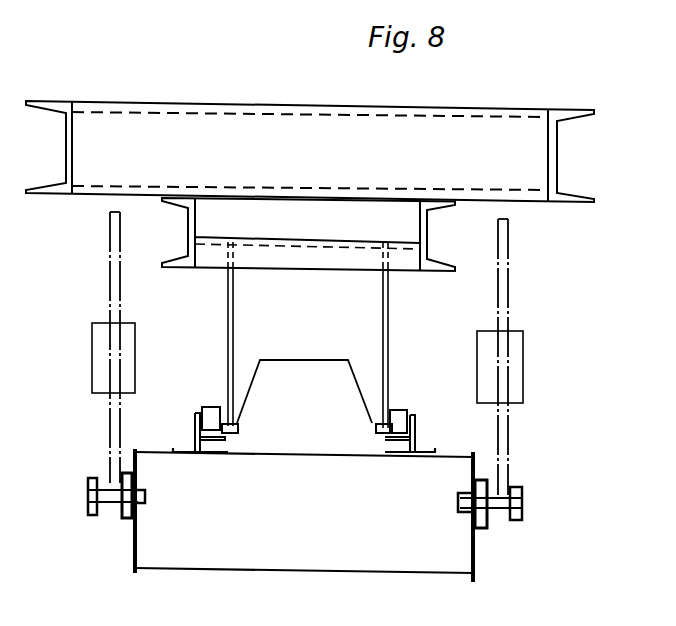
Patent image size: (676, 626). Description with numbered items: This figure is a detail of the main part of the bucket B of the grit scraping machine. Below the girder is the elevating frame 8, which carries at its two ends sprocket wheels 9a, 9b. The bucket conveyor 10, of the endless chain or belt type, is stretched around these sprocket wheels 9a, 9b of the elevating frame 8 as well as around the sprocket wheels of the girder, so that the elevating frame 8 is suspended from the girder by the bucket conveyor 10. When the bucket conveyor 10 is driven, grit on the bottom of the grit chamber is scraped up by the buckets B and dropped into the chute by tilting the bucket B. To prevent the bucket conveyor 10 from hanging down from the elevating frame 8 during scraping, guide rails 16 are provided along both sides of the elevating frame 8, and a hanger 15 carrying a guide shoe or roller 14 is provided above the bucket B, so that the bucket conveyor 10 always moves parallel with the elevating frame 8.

The elevating frame 8 is at (164, 123).
The sprocket wheel 9a is at (95, 365).
The sprocket wheel 9b is at (312, 369).
The bucket conveyor 10 is at (113, 505).
The guide shoe 14 is at (212, 407).
The hanger 15 is at (193, 428).
The guide rails 16 is at (220, 453).
The bucket B is at (257, 555).